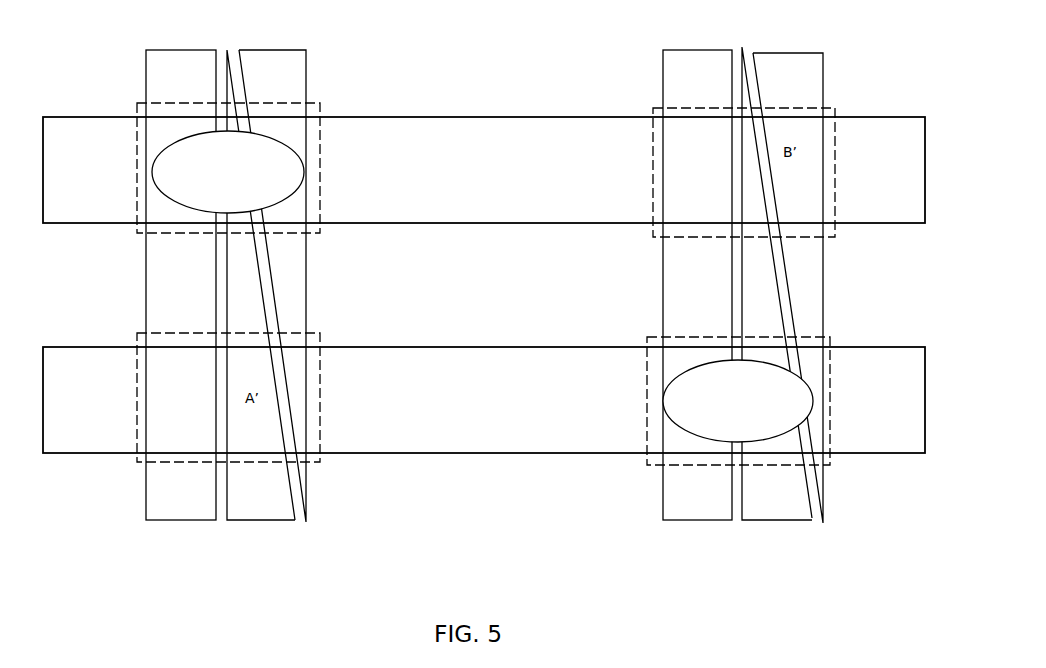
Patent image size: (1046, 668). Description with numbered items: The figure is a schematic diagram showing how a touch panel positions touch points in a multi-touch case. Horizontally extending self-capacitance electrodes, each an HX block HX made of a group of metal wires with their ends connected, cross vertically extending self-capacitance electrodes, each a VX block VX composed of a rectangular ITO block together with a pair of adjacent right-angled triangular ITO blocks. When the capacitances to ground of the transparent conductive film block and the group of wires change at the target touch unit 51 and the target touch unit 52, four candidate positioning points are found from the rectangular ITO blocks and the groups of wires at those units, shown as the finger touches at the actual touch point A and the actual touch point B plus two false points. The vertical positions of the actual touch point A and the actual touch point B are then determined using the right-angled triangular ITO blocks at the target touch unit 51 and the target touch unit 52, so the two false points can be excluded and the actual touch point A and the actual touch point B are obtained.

The target touch unit 51 is at (288, 154).
The target touch unit 52 is at (807, 385).
The HX block HX is at (501, 285).
The VX block VX is at (484, 300).
The actual touch point A is at (228, 172).
The actual touch point B is at (738, 401).